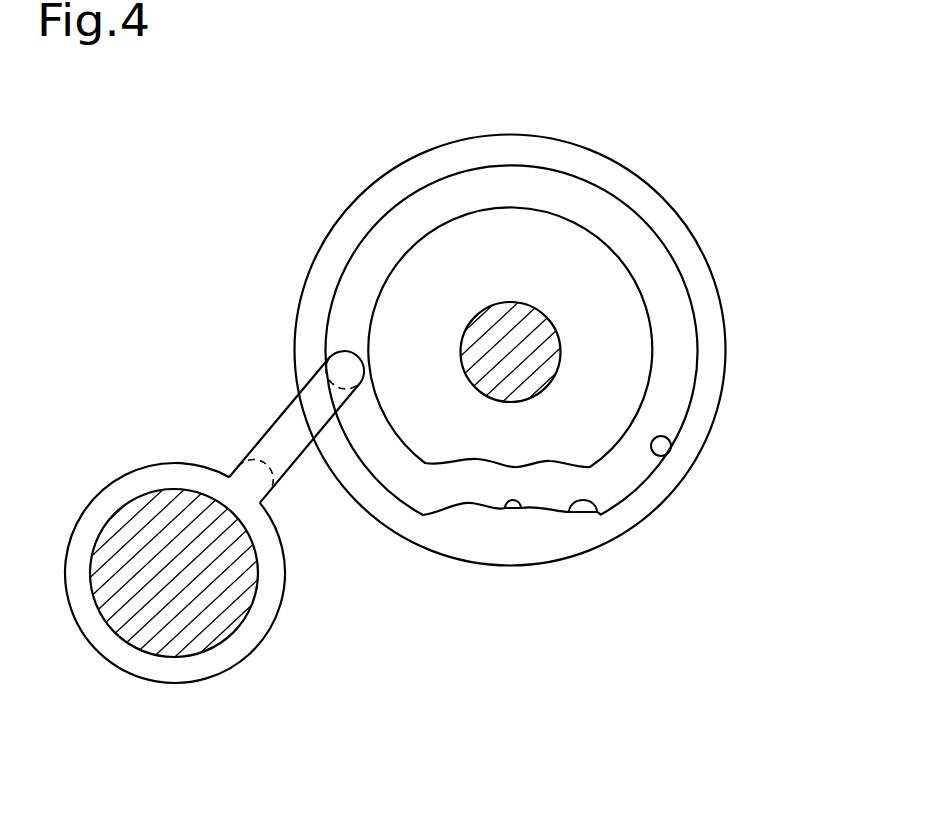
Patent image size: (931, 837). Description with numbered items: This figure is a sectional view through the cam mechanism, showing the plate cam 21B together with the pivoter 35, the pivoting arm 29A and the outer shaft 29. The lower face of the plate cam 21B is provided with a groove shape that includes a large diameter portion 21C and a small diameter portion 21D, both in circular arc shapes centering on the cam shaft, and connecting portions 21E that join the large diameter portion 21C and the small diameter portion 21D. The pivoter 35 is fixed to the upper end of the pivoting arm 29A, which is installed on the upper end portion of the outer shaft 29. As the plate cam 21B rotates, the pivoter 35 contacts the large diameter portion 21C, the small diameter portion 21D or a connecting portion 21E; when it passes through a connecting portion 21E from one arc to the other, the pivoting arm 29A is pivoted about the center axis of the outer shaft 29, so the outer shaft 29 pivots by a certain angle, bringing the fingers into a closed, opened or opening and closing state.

The plate cam 21B is at (725, 307).
The large diameter portion 21C is at (655, 462).
The small diameter portion 21D is at (520, 508).
The connecting portion 21E is at (597, 513).
The pivoter 35 is at (327, 353).
The pivoting arm 29A is at (270, 426).
The outer shaft 29 is at (130, 468).